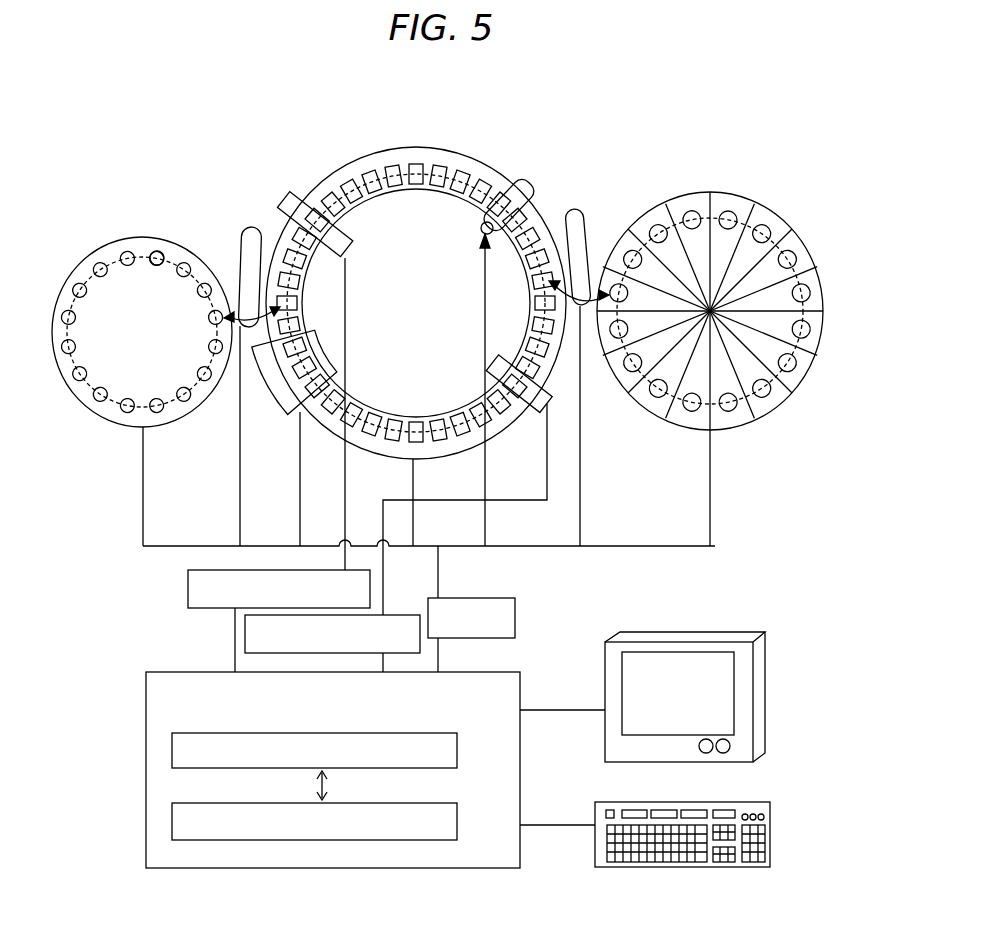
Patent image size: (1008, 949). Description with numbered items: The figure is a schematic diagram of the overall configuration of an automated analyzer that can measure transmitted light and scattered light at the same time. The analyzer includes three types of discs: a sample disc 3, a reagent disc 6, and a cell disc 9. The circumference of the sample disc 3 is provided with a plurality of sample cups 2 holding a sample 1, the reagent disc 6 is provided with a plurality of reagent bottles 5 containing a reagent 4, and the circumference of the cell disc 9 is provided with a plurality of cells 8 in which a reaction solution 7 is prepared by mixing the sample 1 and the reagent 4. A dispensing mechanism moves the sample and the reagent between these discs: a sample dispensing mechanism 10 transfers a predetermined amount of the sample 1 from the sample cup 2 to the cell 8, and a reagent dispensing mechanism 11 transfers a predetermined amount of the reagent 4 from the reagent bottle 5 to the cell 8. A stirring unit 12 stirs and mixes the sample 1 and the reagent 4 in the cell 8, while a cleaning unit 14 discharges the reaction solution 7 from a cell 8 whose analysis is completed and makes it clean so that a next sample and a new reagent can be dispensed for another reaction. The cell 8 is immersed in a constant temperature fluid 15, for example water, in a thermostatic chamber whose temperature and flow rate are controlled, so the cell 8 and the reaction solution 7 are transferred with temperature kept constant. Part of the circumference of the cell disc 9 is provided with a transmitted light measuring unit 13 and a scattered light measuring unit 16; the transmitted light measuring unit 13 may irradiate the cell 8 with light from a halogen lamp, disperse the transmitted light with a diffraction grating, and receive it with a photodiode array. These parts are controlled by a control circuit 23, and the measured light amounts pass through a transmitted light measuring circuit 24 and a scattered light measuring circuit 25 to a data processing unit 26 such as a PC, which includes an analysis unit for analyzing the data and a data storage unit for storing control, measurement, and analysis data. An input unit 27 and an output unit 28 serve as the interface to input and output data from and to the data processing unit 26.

The sample 1 is at (160, 252).
The sample cup 2 is at (130, 253).
The sample disc 3 is at (95, 247).
The reagent 4 is at (728, 211).
The reagent bottle 5 is at (693, 212).
The reagent disc 6 is at (660, 200).
The reaction solution 7 is at (436, 172).
The cell 8 is at (414, 164).
The cell disc 9 is at (392, 149).
The sample dispensing mechanism 10 is at (247, 224).
The reagent dispensing mechanism 11 is at (581, 212).
The stirring unit 12 is at (528, 180).
The transmitted light measuring unit 13 is at (300, 200).
The cleaning unit 14 is at (290, 410).
The constant temperature fluid 15 is at (487, 186).
The scattered light measuring unit 16 is at (527, 404).
The control circuit 23 is at (515, 612).
The transmitted light measuring circuit 24 is at (187, 592).
The scattered light measuring circuit 25 is at (245, 628).
The data processing unit 26 is at (172, 713).
The input unit 27 is at (682, 824).
The output unit 28 is at (685, 686).